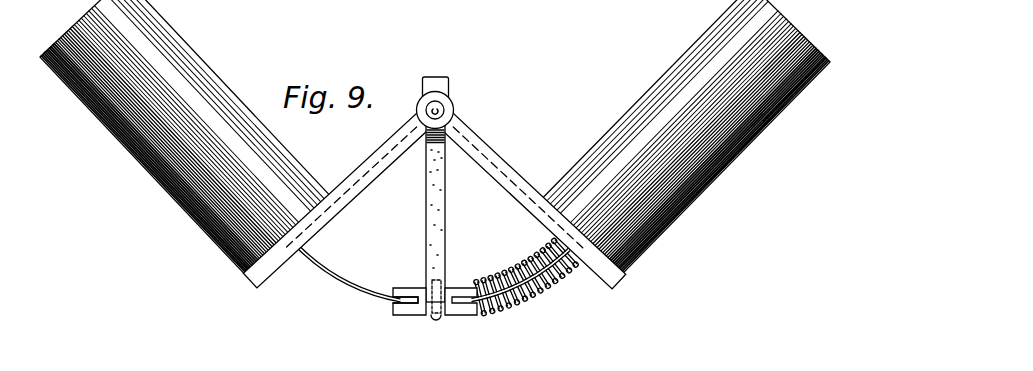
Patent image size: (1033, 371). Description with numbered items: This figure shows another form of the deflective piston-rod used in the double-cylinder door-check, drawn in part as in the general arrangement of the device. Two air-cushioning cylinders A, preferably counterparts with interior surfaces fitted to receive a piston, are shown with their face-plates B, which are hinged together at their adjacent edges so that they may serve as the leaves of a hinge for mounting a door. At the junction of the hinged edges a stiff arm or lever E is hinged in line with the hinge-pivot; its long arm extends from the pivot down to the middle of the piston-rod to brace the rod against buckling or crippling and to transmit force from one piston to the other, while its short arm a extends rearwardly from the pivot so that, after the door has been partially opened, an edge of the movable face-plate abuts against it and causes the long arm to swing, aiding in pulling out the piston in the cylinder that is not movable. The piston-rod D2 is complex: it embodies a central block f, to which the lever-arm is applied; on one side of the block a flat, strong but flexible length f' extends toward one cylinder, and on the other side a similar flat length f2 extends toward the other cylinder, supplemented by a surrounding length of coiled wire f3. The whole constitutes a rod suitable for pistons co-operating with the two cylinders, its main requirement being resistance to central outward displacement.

The air-cushioning cylinders A is at (435, 137).
The face-plates B is at (355, 183).
The short arm a is at (452, 60).
The arm or lever E is at (443, 223).
The piston-rod D2 is at (440, 315).
The central block f is at (405, 285).
The flat flexible part or length f' is at (348, 273).
The flat length f2 is at (527, 296).
The coiled wire f3 is at (532, 264).